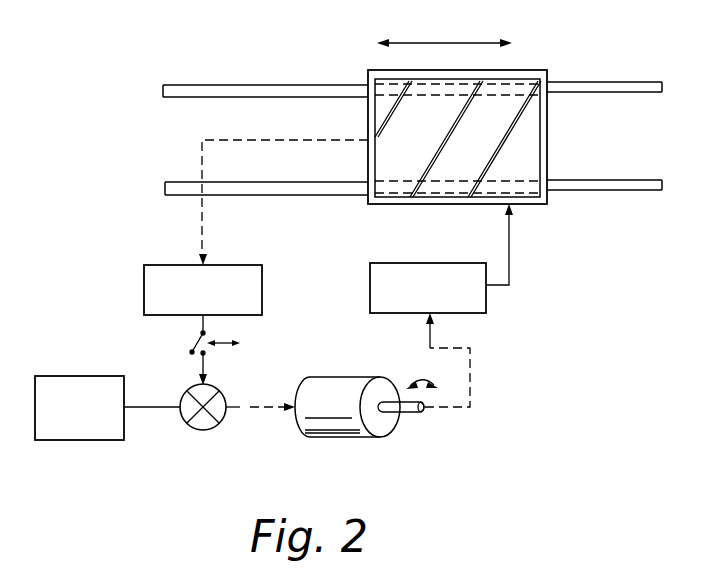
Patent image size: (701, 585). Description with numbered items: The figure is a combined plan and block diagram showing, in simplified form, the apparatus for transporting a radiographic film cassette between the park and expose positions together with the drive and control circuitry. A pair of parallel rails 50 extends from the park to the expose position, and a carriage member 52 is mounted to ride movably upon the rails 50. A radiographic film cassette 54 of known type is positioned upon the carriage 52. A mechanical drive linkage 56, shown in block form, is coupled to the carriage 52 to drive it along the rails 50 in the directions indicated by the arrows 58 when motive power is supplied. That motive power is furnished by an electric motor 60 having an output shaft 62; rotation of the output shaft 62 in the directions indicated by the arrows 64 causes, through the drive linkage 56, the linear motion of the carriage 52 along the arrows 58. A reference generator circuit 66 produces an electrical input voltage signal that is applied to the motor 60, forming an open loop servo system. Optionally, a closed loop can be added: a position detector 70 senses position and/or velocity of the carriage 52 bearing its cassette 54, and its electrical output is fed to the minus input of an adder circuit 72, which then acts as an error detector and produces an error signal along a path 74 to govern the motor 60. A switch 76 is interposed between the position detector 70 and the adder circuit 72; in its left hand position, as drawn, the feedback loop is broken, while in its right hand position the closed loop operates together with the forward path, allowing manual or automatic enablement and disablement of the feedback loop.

The parallel rails 50 is at (180, 98).
The carriage member 52 is at (522, 70).
The radiographic film cassette 54 is at (547, 133).
The mechanical drive linkage 56 is at (465, 263).
The arrows 58 is at (450, 43).
The electric motor 60 is at (352, 437).
The output shaft 62 is at (410, 412).
The arrows 64 is at (421, 380).
The reference generator circuit 66 is at (82, 440).
The position detector 70 is at (237, 263).
The adder circuit 72 is at (205, 430).
The error signal path 74 is at (252, 397).
The switch 76 is at (214, 336).